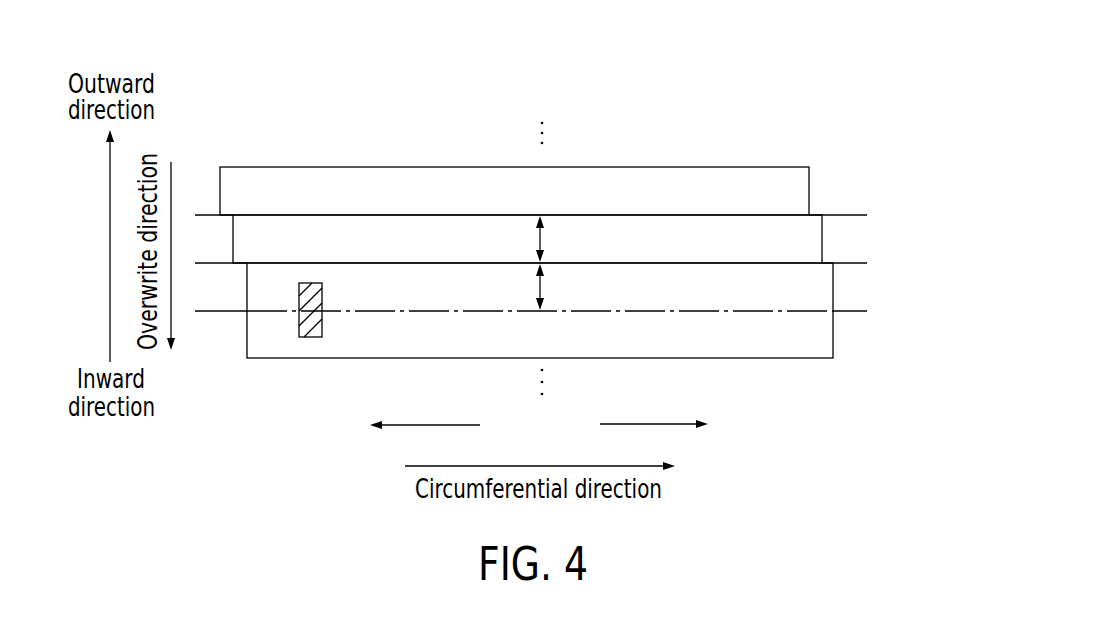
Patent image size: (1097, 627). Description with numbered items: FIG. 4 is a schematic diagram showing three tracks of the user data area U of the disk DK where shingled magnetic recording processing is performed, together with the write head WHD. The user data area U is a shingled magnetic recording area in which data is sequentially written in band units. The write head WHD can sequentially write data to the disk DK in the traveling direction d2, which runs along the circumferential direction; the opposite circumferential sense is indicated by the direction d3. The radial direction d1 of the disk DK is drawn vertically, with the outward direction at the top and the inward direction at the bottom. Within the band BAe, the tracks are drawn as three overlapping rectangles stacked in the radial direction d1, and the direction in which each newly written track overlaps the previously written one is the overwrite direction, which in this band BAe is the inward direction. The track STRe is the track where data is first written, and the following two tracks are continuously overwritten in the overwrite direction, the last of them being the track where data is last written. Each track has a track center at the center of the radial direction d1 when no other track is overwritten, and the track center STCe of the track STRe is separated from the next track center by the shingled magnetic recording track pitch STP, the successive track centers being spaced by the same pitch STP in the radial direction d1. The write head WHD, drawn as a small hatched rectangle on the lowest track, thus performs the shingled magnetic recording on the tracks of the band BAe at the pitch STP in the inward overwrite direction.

The disk DK is at (826, 62).
The user data area U is at (824, 99).
The band BAe is at (812, 140).
The track STRe is at (268, 185).
The track center STCe is at (858, 213).
The shingled magnetic recording track pitch STP is at (546, 241).
The write head WHD is at (310, 337).
The radial direction d1 is at (98, 246).
The traveling direction d2 is at (672, 424).
The circumferential direction (reverse) d3 is at (411, 425).